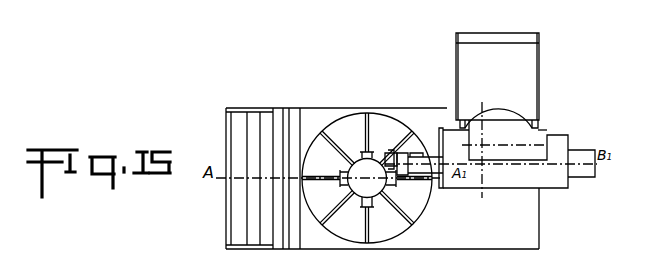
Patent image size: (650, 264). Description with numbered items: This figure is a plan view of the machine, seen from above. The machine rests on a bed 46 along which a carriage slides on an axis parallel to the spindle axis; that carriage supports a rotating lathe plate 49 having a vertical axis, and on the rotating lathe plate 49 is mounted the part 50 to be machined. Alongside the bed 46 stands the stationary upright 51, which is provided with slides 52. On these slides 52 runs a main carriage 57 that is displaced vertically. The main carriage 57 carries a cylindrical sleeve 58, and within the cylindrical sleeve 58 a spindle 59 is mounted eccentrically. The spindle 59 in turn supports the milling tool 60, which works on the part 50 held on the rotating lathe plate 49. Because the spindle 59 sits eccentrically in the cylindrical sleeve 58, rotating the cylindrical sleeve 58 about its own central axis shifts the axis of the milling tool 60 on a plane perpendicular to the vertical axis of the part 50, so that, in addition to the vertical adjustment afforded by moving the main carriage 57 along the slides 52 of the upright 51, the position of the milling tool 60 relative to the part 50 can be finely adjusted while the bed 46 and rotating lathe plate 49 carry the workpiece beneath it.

The bed 46 is at (527, 232).
The rotating lathe plate 49 is at (348, 135).
The part to be machined 50 is at (352, 170).
The stationary upright 51 is at (497, 76).
The slides 52 is at (481, 117).
The main carriage 57 is at (546, 183).
The cylindrical sleeve 58 is at (430, 150).
The spindle 59 is at (404, 152).
The milling tool 60 is at (391, 152).